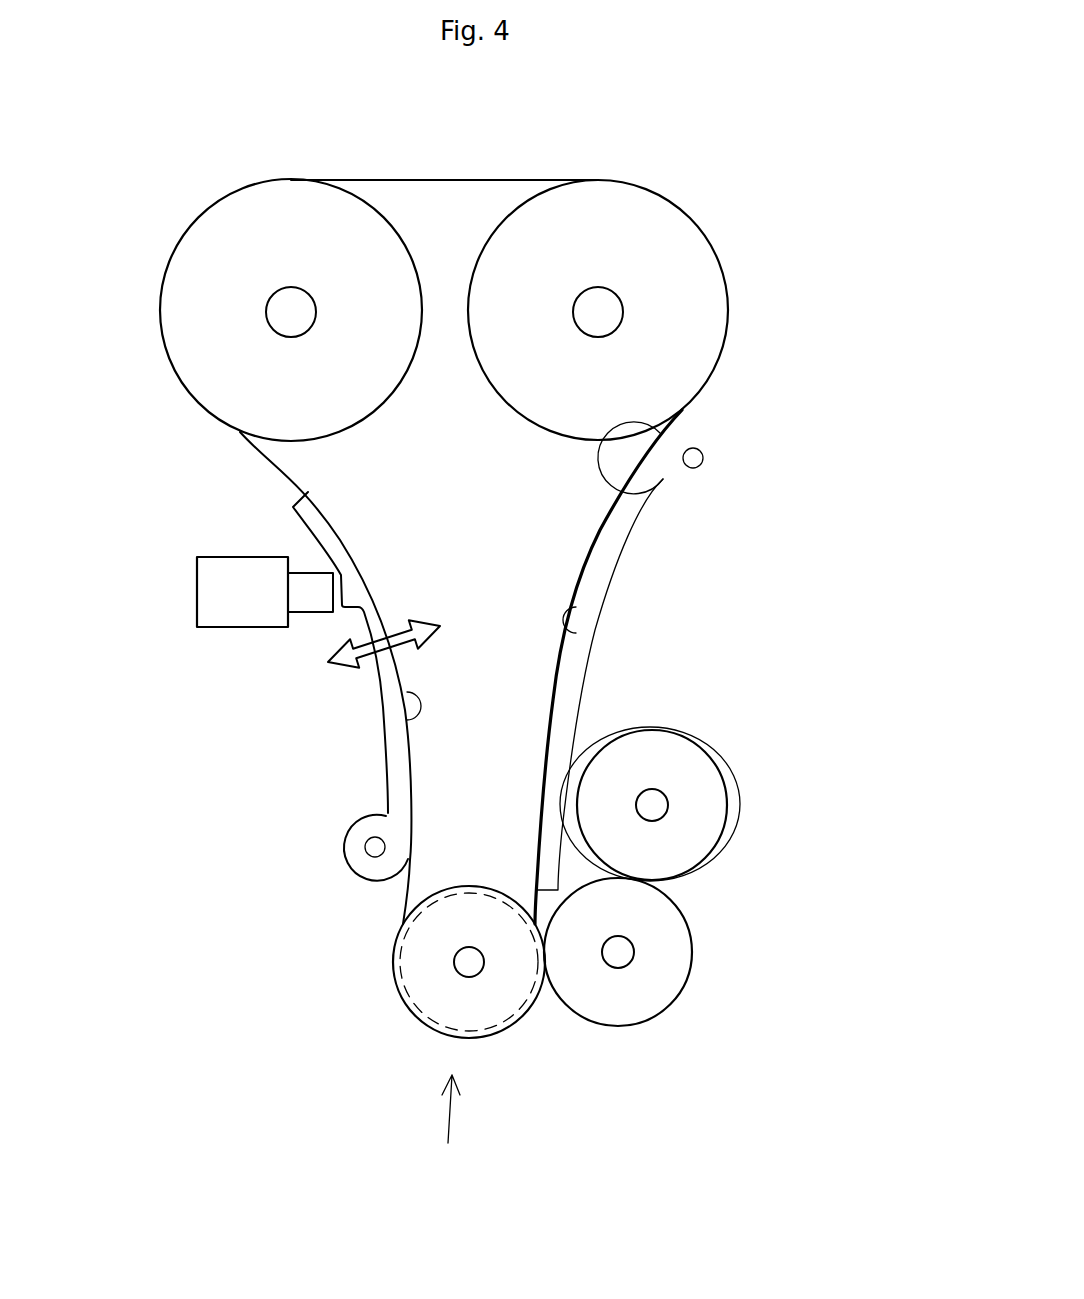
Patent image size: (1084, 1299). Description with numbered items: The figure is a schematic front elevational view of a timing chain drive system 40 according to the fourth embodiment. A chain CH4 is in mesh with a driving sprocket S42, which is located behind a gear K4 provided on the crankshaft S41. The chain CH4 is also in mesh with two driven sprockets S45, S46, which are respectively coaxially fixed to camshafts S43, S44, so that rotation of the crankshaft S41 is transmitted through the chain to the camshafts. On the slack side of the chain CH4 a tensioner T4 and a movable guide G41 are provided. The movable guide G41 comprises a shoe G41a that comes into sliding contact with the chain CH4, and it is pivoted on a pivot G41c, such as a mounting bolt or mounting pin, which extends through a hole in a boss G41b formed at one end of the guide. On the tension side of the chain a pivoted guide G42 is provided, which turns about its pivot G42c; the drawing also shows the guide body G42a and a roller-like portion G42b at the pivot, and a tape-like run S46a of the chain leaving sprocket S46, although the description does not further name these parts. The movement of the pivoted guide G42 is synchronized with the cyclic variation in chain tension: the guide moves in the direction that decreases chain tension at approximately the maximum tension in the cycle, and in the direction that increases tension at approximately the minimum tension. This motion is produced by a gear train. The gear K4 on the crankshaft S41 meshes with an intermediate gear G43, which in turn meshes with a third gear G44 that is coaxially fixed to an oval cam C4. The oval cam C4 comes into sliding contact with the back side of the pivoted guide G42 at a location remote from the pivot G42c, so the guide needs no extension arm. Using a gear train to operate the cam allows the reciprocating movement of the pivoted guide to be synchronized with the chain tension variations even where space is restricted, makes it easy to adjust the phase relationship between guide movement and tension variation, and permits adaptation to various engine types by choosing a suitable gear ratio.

The chain CH4 is at (455, 180).
The camshaft S43 is at (270, 298).
The camshaft S44 is at (620, 300).
The driven sprocket S45 is at (188, 337).
The driven sprocket S46 is at (695, 322).
The magnetic tape S46a is at (685, 412).
The pivoted guide G42 is at (742, 656).
The guide plate G42a is at (575, 607).
The guide roller G42b is at (698, 485).
The pivot G42c is at (698, 458).
The tensioner T4 is at (207, 583).
The movable guide G41 is at (264, 686).
The shoe G41a is at (390, 695).
The boss G41b is at (355, 827).
The pivot G41c is at (365, 850).
The oval cam C4 is at (737, 790).
The third gear G44 is at (707, 832).
The intermediate gear G43 is at (677, 970).
The crankshaft S41 is at (453, 963).
The gear K4 is at (412, 1013).
The driving sprocket S42 is at (523, 1005).
The timing chain drive system 40 is at (443, 1129).